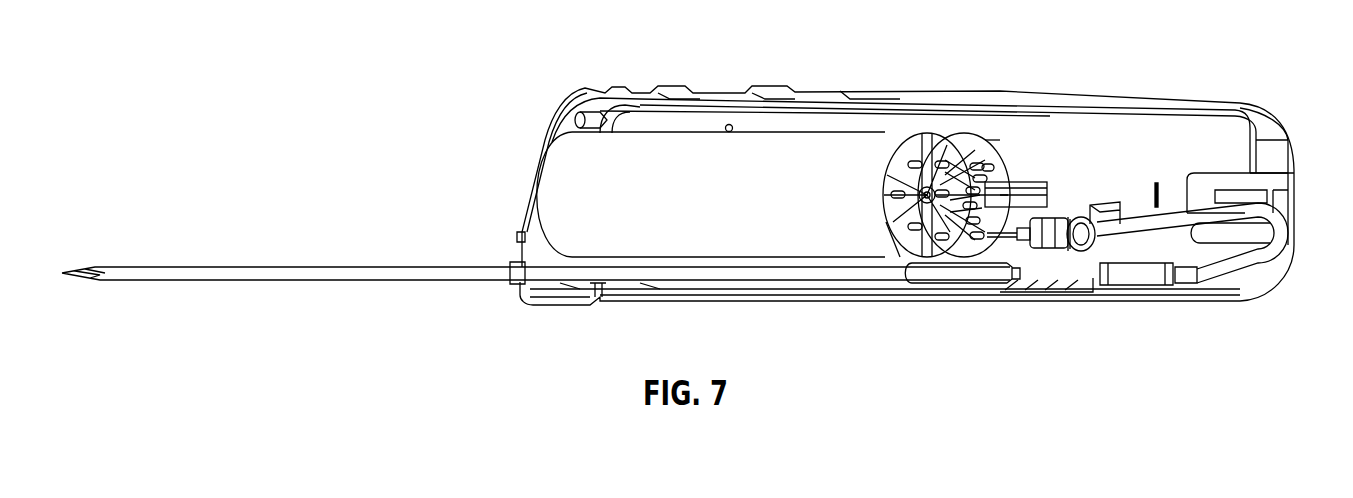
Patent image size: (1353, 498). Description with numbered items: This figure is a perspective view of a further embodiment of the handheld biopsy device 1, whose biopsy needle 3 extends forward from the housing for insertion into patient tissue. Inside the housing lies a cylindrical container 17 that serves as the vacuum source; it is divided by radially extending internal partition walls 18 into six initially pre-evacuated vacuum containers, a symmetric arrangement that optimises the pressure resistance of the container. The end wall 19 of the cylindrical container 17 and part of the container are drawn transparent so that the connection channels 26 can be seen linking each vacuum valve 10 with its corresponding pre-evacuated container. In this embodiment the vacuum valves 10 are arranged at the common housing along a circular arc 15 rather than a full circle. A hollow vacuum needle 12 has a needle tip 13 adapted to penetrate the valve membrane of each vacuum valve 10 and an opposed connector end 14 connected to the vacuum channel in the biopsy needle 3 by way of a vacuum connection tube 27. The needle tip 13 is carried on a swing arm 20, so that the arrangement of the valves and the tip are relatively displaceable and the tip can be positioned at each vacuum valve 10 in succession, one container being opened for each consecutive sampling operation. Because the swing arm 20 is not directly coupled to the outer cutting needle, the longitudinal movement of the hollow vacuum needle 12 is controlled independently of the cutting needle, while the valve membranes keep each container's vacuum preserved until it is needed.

The biopsy device 1 is at (533, 72).
The biopsy needle 3 is at (270, 273).
The cylindrical container 17 is at (566, 180).
The internally extending partition wall 18 is at (905, 192).
The end wall 19 is at (962, 160).
The vacuum valve 10 is at (983, 180).
The circular arc 15 is at (994, 137).
The needle tip 13 is at (996, 246).
The hollow vacuum needle 12 is at (997, 258).
The connector end 14 is at (1025, 253).
The swing arm 20 is at (1097, 215).
The connection channel 26 is at (958, 270).
The vacuum connection tube 27 is at (1270, 252).